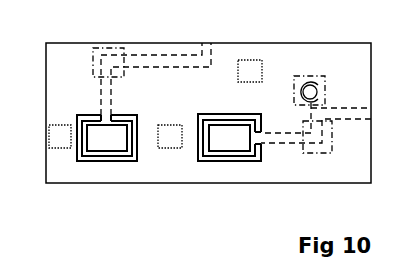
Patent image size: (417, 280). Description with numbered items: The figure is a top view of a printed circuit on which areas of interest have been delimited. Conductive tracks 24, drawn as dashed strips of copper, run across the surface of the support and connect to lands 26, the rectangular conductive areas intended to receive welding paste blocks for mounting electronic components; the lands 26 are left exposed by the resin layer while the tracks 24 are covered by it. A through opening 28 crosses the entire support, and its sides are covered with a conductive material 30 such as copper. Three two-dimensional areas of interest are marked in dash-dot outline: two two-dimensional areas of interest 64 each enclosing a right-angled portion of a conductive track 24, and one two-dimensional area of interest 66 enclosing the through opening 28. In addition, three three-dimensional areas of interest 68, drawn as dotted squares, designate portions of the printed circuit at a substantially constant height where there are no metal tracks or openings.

The conductive track 24 is at (156, 58).
The land 26 is at (105, 145).
The opening 28 is at (307, 81).
The conductive material 30 is at (322, 99).
The 2D area of interest 64 is at (102, 48).
The 2D area of interest 66 is at (328, 76).
The 3D area of interest 68 is at (49, 139).